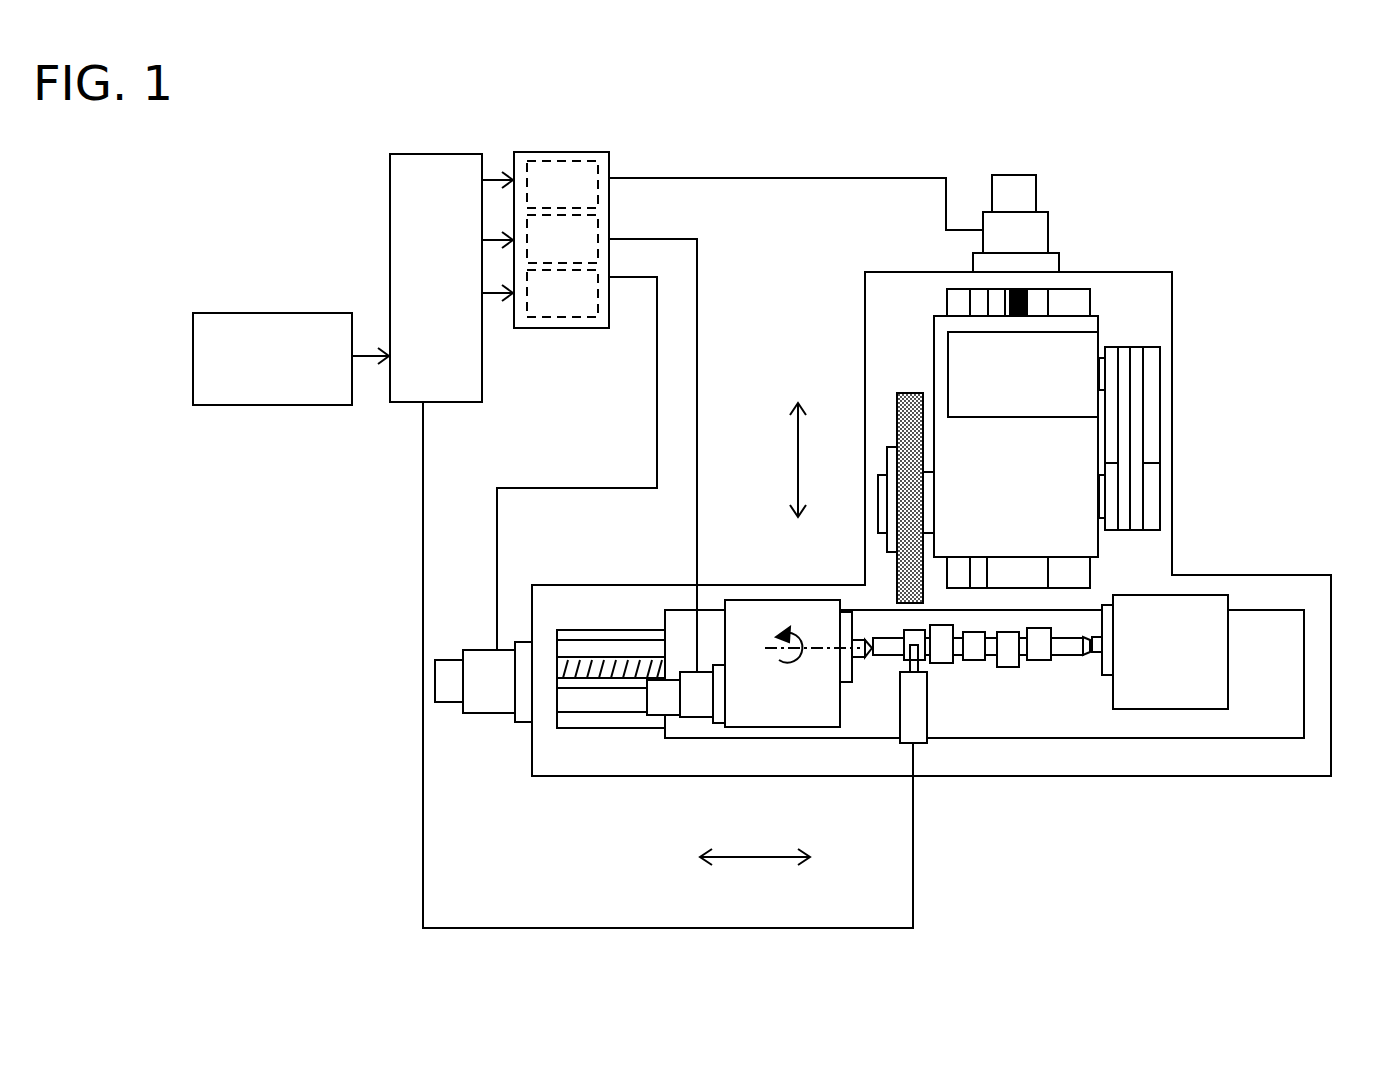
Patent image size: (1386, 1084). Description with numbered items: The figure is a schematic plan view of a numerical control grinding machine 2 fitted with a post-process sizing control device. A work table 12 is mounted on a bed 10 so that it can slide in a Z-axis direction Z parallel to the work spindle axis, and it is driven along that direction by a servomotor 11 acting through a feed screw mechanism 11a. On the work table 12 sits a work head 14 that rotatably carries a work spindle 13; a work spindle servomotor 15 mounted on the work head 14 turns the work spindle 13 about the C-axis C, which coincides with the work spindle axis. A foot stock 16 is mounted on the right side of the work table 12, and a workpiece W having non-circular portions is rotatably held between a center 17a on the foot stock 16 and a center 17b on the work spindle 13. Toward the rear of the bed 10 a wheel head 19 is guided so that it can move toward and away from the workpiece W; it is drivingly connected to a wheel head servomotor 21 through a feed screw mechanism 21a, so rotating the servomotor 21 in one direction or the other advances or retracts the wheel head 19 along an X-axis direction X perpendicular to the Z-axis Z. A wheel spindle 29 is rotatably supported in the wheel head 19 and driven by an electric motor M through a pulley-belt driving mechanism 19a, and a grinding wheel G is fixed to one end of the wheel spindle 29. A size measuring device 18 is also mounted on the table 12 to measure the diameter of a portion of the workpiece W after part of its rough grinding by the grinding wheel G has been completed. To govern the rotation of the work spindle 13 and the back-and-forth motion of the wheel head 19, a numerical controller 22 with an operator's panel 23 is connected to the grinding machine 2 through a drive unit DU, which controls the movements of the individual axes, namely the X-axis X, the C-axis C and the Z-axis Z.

The numerical control grinding machine 2 is at (1291, 253).
The bed 10 is at (1300, 574).
The servomotor 11 is at (483, 700).
The feed screw mechanism 11a is at (607, 677).
The work table 12 is at (1268, 725).
The work spindle 13 is at (847, 632).
The work head 14 is at (752, 708).
The work spindle servomotor 15 is at (697, 707).
The foot stock 16 is at (1167, 702).
The center 17a is at (1097, 657).
The center 17b is at (877, 667).
The size measuring device 18 is at (913, 688).
The wheel head 19 is at (1085, 545).
The pulley-belt driving mechanism 19a is at (1172, 441).
The wheel head servomotor 21 is at (1036, 233).
The feed screw mechanism 21a is at (1012, 303).
The numerical controller 22 is at (433, 160).
The operator's panel 23 is at (283, 407).
The wheel spindle 29 is at (933, 497).
The grinding wheel G is at (897, 395).
The electric motor M is at (1085, 338).
The workpiece W is at (986, 672).
The drive unit DU is at (565, 150).
The X-axis X is at (779, 460).
The Z-axis Z is at (748, 860).
The C-axis C is at (798, 670).